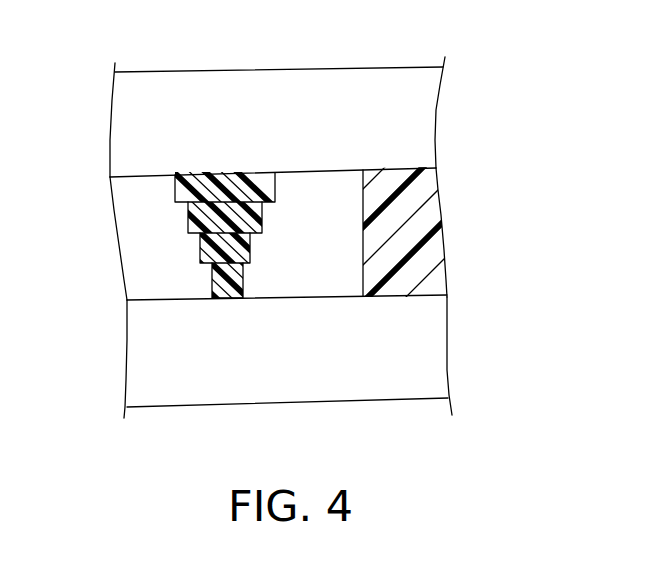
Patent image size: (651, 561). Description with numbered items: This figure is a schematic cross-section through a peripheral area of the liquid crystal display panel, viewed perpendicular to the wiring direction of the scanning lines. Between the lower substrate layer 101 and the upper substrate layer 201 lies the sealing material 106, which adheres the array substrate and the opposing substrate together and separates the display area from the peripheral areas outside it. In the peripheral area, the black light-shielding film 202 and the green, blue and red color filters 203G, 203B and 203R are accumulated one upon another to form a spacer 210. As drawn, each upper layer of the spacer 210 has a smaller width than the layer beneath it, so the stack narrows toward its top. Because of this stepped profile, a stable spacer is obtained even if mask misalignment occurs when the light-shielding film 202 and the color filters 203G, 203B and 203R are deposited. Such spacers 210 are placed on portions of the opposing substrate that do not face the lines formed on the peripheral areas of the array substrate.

The substrate 101 is at (440, 372).
The sealing material 106 is at (437, 214).
The counter substrate 201 is at (343, 84).
The light-shielding film 202 is at (181, 195).
The green color filter 203G is at (197, 222).
The blue color filter 203B is at (207, 254).
The red color filter 203R is at (216, 291).
The spacer 210 is at (331, 192).